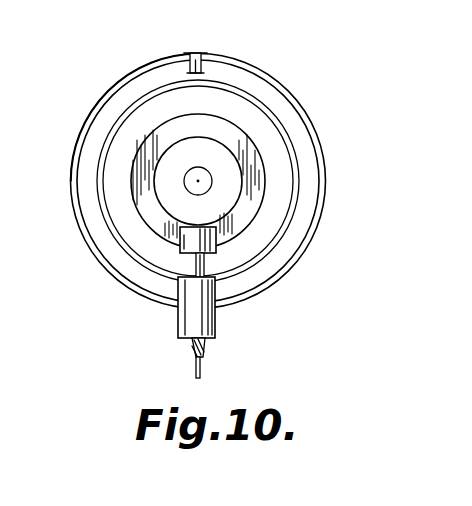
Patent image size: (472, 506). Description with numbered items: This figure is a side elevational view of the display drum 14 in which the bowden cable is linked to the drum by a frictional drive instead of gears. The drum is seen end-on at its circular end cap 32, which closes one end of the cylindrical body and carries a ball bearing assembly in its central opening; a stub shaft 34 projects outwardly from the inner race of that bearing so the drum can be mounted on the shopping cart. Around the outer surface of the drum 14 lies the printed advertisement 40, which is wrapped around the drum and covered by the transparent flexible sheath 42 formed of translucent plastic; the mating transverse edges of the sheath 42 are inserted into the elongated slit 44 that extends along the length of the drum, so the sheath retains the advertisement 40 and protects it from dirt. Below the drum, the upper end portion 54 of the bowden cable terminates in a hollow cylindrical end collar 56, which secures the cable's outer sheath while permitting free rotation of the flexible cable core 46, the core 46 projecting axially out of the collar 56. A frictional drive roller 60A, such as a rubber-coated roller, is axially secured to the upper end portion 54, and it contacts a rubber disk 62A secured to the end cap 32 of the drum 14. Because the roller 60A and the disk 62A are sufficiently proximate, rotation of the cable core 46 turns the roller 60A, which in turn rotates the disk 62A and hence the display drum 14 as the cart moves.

The display drum 14 is at (334, 182).
The end cap 32 is at (246, 252).
The stub shaft 34 is at (205, 178).
The printed advertisement 40 is at (266, 80).
The transparent flexible sheath 42 is at (104, 94).
The elongated slit 44 is at (200, 60).
The flexible cable core 46 is at (178, 275).
The upper end portion 54 is at (200, 347).
The end collar 56 is at (197, 310).
The frictional drive roller 60A is at (181, 231).
The rubber disk 62A is at (232, 223).